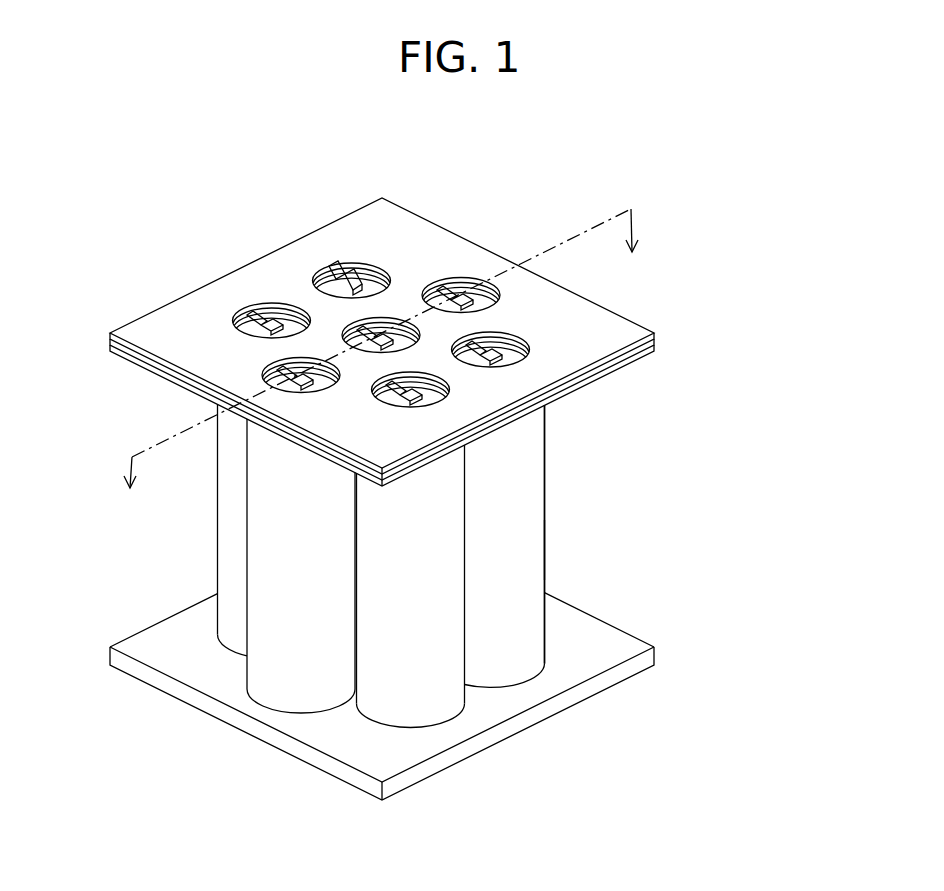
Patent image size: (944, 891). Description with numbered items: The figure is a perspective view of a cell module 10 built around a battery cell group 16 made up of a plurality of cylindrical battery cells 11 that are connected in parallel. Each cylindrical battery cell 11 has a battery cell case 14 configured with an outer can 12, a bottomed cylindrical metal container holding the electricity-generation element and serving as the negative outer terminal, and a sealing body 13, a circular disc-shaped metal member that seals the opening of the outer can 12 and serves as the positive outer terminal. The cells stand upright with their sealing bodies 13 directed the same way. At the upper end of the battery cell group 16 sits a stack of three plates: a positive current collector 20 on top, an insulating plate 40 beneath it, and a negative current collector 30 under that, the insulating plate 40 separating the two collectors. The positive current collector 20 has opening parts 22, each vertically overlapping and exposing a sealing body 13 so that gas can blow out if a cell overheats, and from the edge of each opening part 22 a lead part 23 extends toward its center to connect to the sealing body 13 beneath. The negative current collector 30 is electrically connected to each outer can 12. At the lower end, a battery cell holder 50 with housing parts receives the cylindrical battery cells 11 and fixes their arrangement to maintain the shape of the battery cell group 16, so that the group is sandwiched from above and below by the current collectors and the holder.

The cell module 10 is at (637, 172).
The cylindrical battery cell 11 is at (275, 686).
The outer can 12 is at (535, 475).
The sealing body 13 is at (485, 352).
The battery cell case 14 is at (633, 388).
The battery cell group 16 is at (555, 548).
The positive current collector 20 is at (603, 330).
The opening part 22 is at (337, 262).
The lead part 23 is at (368, 260).
The negative current collector 30 is at (623, 362).
The insulating plate 40 is at (654, 339).
The battery cell holder 50 is at (165, 633).